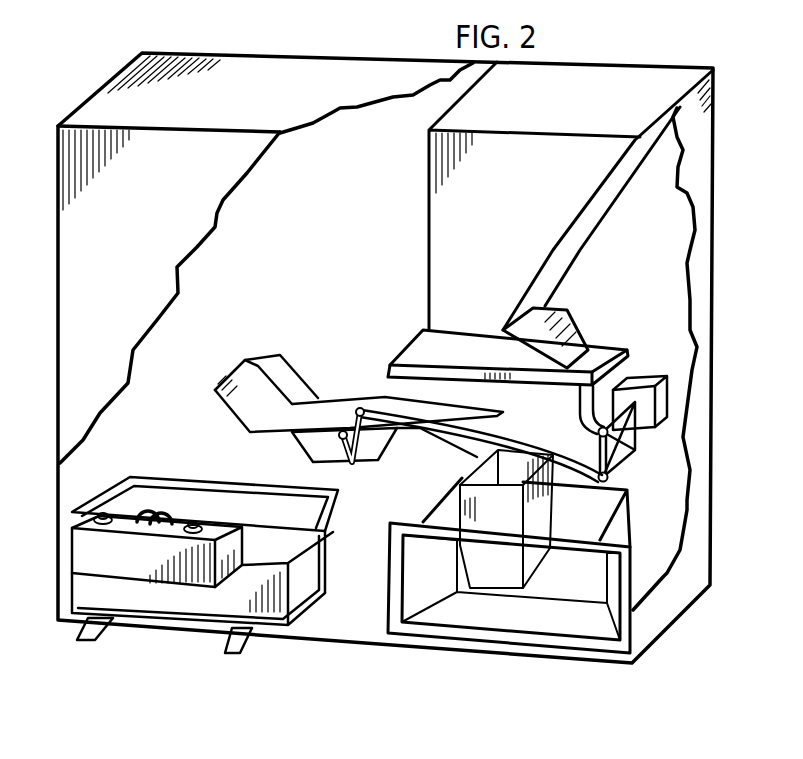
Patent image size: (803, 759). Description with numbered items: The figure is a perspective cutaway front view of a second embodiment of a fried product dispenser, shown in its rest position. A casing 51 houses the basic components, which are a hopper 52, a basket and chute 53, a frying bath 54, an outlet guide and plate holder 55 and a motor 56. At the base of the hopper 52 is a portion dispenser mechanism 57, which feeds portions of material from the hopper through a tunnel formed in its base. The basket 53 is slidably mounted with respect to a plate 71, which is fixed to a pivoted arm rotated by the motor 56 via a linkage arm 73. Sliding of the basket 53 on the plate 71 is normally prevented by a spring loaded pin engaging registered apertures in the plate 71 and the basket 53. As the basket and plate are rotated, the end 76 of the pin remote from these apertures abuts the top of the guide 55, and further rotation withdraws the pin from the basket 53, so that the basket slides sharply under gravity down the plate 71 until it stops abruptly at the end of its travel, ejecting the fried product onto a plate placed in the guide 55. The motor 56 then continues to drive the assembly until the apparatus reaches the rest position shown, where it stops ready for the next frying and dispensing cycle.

The casing 51 is at (165, 230).
The hopper 52 is at (513, 231).
The basket and chute 53 is at (243, 377).
The frying bath 54 is at (207, 500).
The outlet guide and plate holder 55 is at (521, 628).
The motor 56 is at (650, 385).
The portion dispenser mechanism 57 is at (466, 364).
The plate 71 is at (307, 445).
The linkage arm 73 is at (583, 461).
The end of pin 76 is at (458, 448).